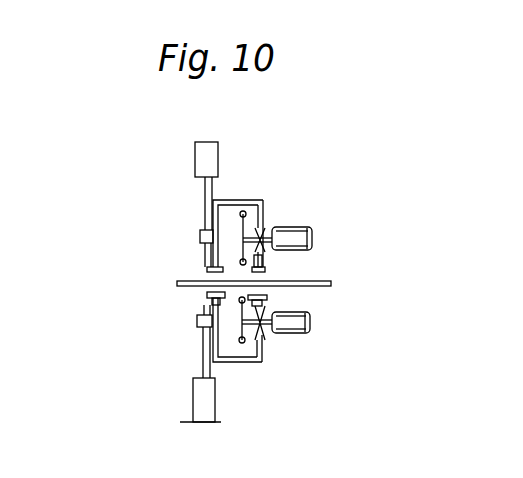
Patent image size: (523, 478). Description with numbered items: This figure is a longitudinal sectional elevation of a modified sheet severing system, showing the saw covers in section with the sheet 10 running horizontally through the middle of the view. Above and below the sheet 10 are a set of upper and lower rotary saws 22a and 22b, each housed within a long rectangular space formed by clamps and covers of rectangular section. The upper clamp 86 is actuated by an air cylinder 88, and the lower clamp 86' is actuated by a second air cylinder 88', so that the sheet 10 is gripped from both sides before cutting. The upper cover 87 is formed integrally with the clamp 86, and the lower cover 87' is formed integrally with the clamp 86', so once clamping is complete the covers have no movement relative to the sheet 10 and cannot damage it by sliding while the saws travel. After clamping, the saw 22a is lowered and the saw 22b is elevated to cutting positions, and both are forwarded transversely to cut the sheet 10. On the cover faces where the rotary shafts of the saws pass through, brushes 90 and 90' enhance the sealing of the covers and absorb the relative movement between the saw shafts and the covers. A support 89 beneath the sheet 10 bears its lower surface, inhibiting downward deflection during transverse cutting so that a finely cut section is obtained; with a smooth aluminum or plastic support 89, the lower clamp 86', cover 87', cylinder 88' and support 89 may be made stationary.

The sheet 10 is at (326, 284).
The air cylinder 88 is at (213, 170).
The cover 87 is at (238, 213).
The upper rotary saw 22a is at (254, 219).
The brush 90 is at (301, 223).
The clamp 86 is at (237, 252).
The support 89 is at (206, 296).
The clamp 86' is at (204, 339).
The brush 90' is at (312, 315).
The lower rotary saw 22b is at (240, 363).
The cover 87' is at (249, 366).
The air cylinder 88' is at (200, 394).